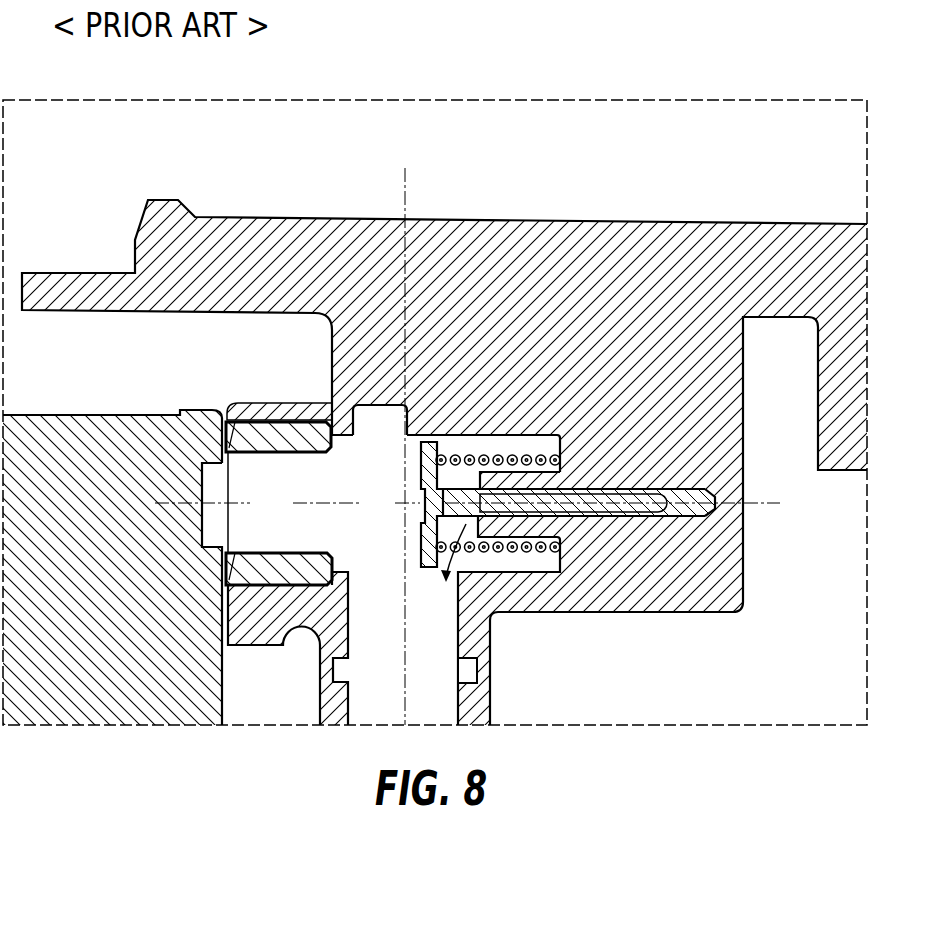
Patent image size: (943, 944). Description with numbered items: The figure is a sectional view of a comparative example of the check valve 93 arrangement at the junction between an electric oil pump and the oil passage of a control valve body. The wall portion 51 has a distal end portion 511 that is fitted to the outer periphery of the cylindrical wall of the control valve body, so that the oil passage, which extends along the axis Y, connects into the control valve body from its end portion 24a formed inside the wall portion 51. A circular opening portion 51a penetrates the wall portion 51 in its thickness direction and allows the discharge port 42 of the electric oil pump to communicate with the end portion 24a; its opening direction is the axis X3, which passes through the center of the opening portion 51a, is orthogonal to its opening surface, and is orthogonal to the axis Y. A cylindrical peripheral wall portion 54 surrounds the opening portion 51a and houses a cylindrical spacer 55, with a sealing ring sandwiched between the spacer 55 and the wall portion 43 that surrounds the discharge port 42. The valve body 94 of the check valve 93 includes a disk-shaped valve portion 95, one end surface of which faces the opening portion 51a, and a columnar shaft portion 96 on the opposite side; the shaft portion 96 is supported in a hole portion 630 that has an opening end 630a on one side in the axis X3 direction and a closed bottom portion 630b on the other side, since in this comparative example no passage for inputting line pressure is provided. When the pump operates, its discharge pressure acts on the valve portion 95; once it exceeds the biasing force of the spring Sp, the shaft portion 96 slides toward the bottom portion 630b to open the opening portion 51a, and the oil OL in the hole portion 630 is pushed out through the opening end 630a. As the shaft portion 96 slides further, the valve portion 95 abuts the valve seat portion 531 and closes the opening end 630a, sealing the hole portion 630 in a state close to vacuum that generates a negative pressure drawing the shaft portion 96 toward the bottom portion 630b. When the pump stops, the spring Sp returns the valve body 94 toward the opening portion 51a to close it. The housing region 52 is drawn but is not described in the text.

The discharge port 42 is at (218, 533).
The wall portion 43 is at (215, 433).
The wall portion 51 is at (331, 363).
The opening portion 51a is at (361, 405).
The housing body 52 is at (492, 627).
The distal end portion 511 is at (490, 667).
The valve seat portion 531 is at (473, 558).
The peripheral wall portion 54 is at (258, 613).
The spacer 55 is at (281, 553).
The check valve 93 is at (414, 498).
The valve body 94 is at (408, 433).
The valve portion 95 is at (433, 442).
The shaft portion 96 is at (510, 455).
The hole portion 630 is at (700, 512).
The opening end 630a is at (466, 458).
The bottom portion 630b is at (708, 514).
The spring Sp is at (559, 440).
The oil OL is at (420, 531).
The end portion 24a is at (458, 613).
The axis X3 is at (488, 510).
The axis Y is at (404, 430).